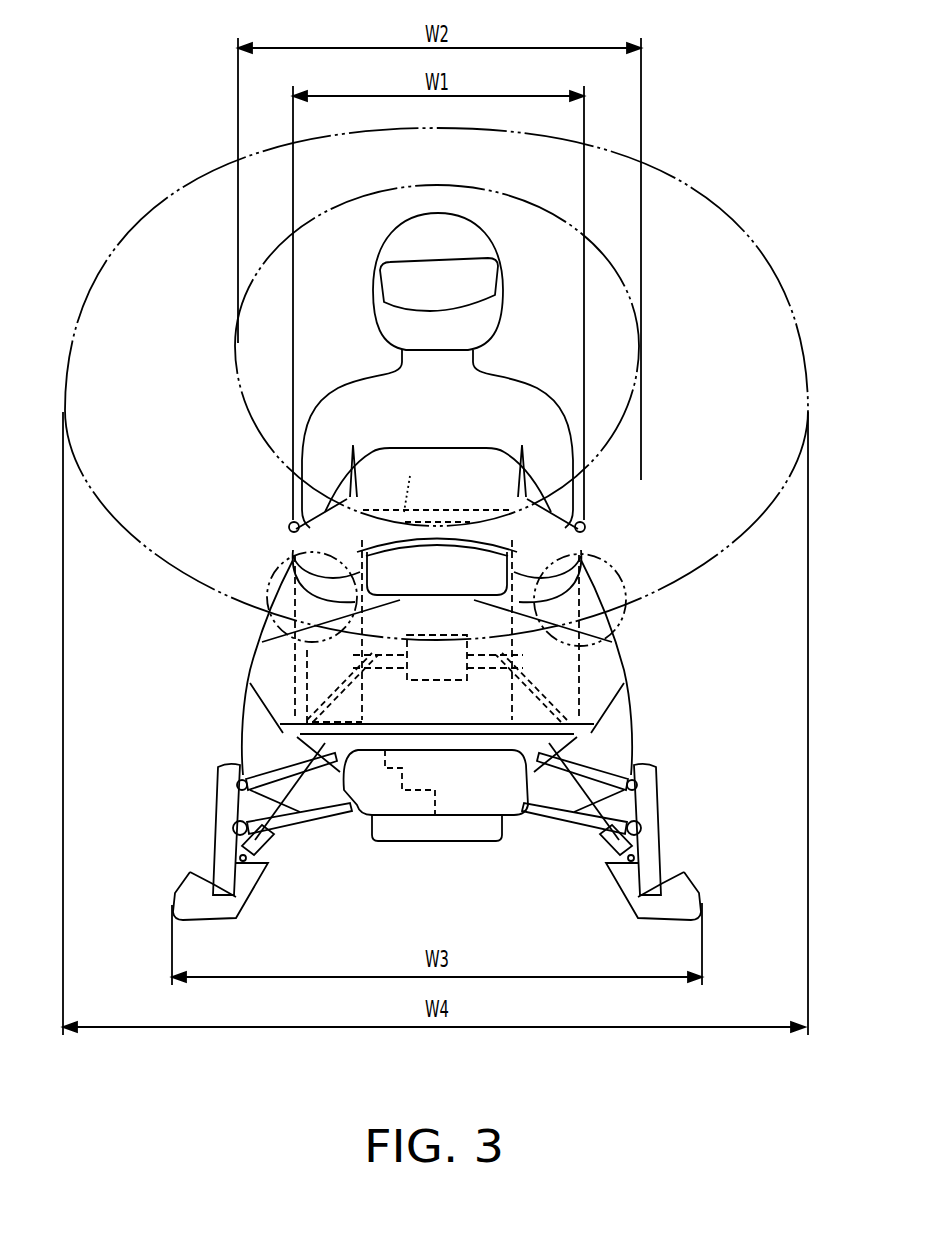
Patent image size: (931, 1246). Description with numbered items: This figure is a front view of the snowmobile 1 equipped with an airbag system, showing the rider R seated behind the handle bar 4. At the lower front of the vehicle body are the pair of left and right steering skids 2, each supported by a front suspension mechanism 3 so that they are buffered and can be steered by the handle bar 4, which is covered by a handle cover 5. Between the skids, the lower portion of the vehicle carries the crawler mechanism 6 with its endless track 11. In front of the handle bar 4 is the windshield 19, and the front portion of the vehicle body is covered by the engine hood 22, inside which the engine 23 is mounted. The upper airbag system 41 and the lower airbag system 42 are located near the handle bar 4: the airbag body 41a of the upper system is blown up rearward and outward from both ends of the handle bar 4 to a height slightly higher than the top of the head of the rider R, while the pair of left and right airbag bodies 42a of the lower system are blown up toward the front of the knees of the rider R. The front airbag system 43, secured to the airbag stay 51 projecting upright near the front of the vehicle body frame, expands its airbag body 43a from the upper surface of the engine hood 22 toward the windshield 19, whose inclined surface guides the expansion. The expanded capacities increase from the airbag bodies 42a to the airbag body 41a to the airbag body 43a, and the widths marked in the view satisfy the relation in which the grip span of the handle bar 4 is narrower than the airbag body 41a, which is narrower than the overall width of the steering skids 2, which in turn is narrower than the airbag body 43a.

The snowmobile 1 is at (205, 722).
The steering skids 2 is at (176, 886).
The front suspension mechanisms 3 is at (206, 810).
The handle bar 4 is at (290, 526).
The handle cover 5 is at (411, 484).
The crawler mechanism 6 is at (436, 833).
The endless track 11 is at (440, 843).
The windshield 19 is at (437, 447).
The engine hood 22 is at (262, 648).
The engine 23 is at (307, 682).
The upper airbag system 41 is at (445, 515).
The airbag body 41a is at (640, 363).
The lower airbag system 42 is at (490, 590).
The airbag bodies 42a is at (268, 580).
The front airbag system 43 is at (418, 680).
The airbag body 43a is at (700, 196).
The airbag stay 51 is at (555, 700).
The rider R is at (524, 380).